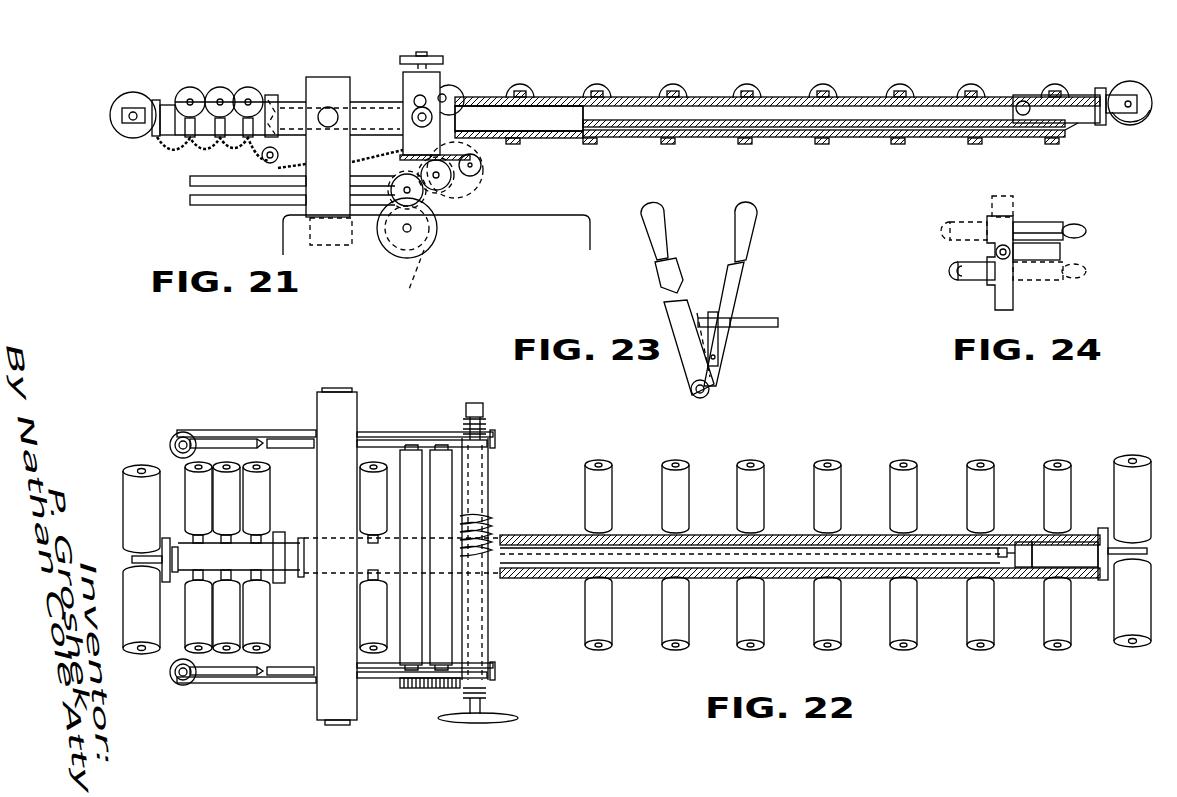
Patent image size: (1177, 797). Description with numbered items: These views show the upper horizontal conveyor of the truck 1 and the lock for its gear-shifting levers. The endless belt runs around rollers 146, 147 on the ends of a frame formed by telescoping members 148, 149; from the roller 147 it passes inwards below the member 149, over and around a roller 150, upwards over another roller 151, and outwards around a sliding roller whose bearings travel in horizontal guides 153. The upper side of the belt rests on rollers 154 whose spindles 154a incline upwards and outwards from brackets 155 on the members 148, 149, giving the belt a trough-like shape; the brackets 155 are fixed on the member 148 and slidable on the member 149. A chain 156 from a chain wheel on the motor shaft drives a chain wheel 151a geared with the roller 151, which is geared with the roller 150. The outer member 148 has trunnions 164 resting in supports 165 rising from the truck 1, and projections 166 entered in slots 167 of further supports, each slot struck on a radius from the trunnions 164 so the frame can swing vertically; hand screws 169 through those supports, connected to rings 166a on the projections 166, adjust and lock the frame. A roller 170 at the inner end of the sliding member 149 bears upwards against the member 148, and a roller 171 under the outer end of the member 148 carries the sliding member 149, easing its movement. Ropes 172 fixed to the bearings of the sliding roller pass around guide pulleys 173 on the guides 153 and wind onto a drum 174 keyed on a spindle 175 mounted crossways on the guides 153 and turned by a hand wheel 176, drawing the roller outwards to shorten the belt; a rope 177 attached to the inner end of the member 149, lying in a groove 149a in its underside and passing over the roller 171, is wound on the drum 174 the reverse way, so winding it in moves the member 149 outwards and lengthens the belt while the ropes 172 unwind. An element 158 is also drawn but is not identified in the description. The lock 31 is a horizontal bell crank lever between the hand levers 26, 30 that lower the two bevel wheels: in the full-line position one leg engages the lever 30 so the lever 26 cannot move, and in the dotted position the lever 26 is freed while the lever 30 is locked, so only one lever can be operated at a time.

In FIG. 21, the truck 1 is at (300, 239).
In FIG. 23, the hand lever 26 is at (656, 282).
In FIG. 24, the hand lever 26 is at (975, 272).
In FIG. 23, the hand lever 30 is at (732, 288).
In FIG. 24, the hand lever 30 is at (1038, 226).
In FIG. 23, the lock 31 is at (745, 328).
In FIG. 24, the lock 31 is at (1030, 260).
In FIG. 21, the roller 146 is at (1130, 81).
In FIG. 22, the roller 146 is at (1128, 490).
In FIG. 21, the roller 147 is at (133, 92).
In FIG. 22, the roller 147 is at (141, 510).
In FIG. 21, the frame member 148 is at (716, 96).
In FIG. 22, the frame member 148 is at (285, 543).
In FIG. 21, the frame member 149 is at (176, 146).
In FIG. 22, the frame member 149 is at (712, 578).
In FIG. 21, the groove 149a is at (793, 128).
In FIG. 21, the roller 150 is at (425, 190).
In FIG. 22, the roller 150 is at (448, 655).
In FIG. 21, the roller 151 is at (435, 228).
In FIG. 22, the roller 151 is at (413, 645).
In FIG. 21, the chain wheel 151a is at (430, 245).
In FIG. 21, the horizontal guides 153 is at (190, 199).
In FIG. 22, the horizontal guides 153 is at (230, 439).
In FIG. 21, the rollers 154 is at (190, 87).
In FIG. 22, the rollers 154 is at (192, 485).
In FIG. 22, the spindles 154a is at (675, 470).
In FIG. 21, the brackets 155 is at (220, 118).
In FIG. 22, the brackets 155 is at (262, 565).
In FIG. 21, the chain 156 is at (415, 280).
In FIG. 21, the rack plate 158 is at (420, 178).
In FIG. 22, the rack plate 158 is at (428, 690).
In FIG. 21, the trunnions 164 is at (322, 112).
In FIG. 22, the trunnions 164 is at (337, 388).
In FIG. 21, the supports 165 is at (323, 82).
In FIG. 22, the supports 165 is at (343, 401).
In FIG. 21, the projections 166 is at (449, 92).
In FIG. 21, the rings 166a is at (430, 76).
In FIG. 21, the slots 167 is at (410, 96).
In FIG. 21, the hand screws 169 is at (414, 56).
In FIG. 21, the roller 170 is at (1022, 100).
In FIG. 22, the roller 170 is at (1032, 580).
In FIG. 21, the roller 171 is at (262, 160).
In FIG. 22, the ropes 172 is at (292, 439).
In FIG. 22, the guide pulleys 173 is at (184, 432).
In FIG. 22, the drum 174 is at (490, 645).
In FIG. 21, the spindle 175 is at (451, 173).
In FIG. 22, the spindle 175 is at (472, 403).
In FIG. 21, the hand wheel 176 is at (481, 160).
In FIG. 21, the rope 177 is at (690, 138).
In FIG. 22, the rope 177 is at (472, 545).